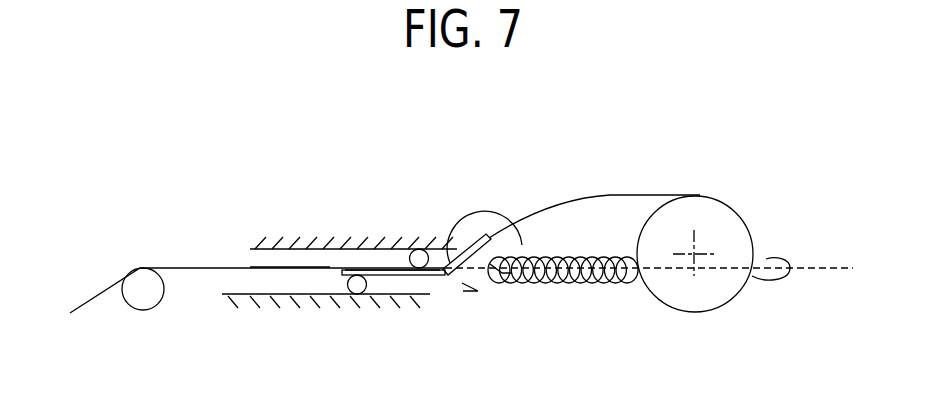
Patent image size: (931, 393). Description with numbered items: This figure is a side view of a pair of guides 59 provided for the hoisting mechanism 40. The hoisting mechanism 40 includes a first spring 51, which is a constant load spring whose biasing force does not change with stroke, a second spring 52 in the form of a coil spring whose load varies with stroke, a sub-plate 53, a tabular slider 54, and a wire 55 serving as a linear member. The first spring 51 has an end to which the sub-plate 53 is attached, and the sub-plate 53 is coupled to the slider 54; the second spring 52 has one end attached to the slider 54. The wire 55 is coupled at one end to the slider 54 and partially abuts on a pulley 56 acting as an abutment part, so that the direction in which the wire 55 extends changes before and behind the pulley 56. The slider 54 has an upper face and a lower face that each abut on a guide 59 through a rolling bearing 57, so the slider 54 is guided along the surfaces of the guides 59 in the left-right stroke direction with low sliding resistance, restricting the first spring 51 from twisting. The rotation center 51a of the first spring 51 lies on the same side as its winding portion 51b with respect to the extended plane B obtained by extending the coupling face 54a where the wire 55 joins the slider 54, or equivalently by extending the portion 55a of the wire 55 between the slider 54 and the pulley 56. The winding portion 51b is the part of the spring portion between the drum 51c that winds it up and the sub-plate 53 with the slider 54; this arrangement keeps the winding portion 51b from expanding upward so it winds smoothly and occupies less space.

The hoisting mechanism 40 is at (637, 157).
The first spring 51 is at (730, 298).
The rotation center 51a is at (698, 252).
The winding portion 51b is at (587, 195).
The drum 51c is at (733, 227).
The second spring 52 is at (570, 285).
The sub-plate 53 is at (468, 240).
The slider 54 is at (410, 277).
The coupling face 54a is at (367, 268).
The wire 55 is at (203, 265).
The portion of the wire 55a is at (278, 266).
The pulley 56 is at (165, 303).
The rolling bearing 57 is at (418, 249).
The guide 59 is at (325, 245).
The extended plane B is at (813, 269).